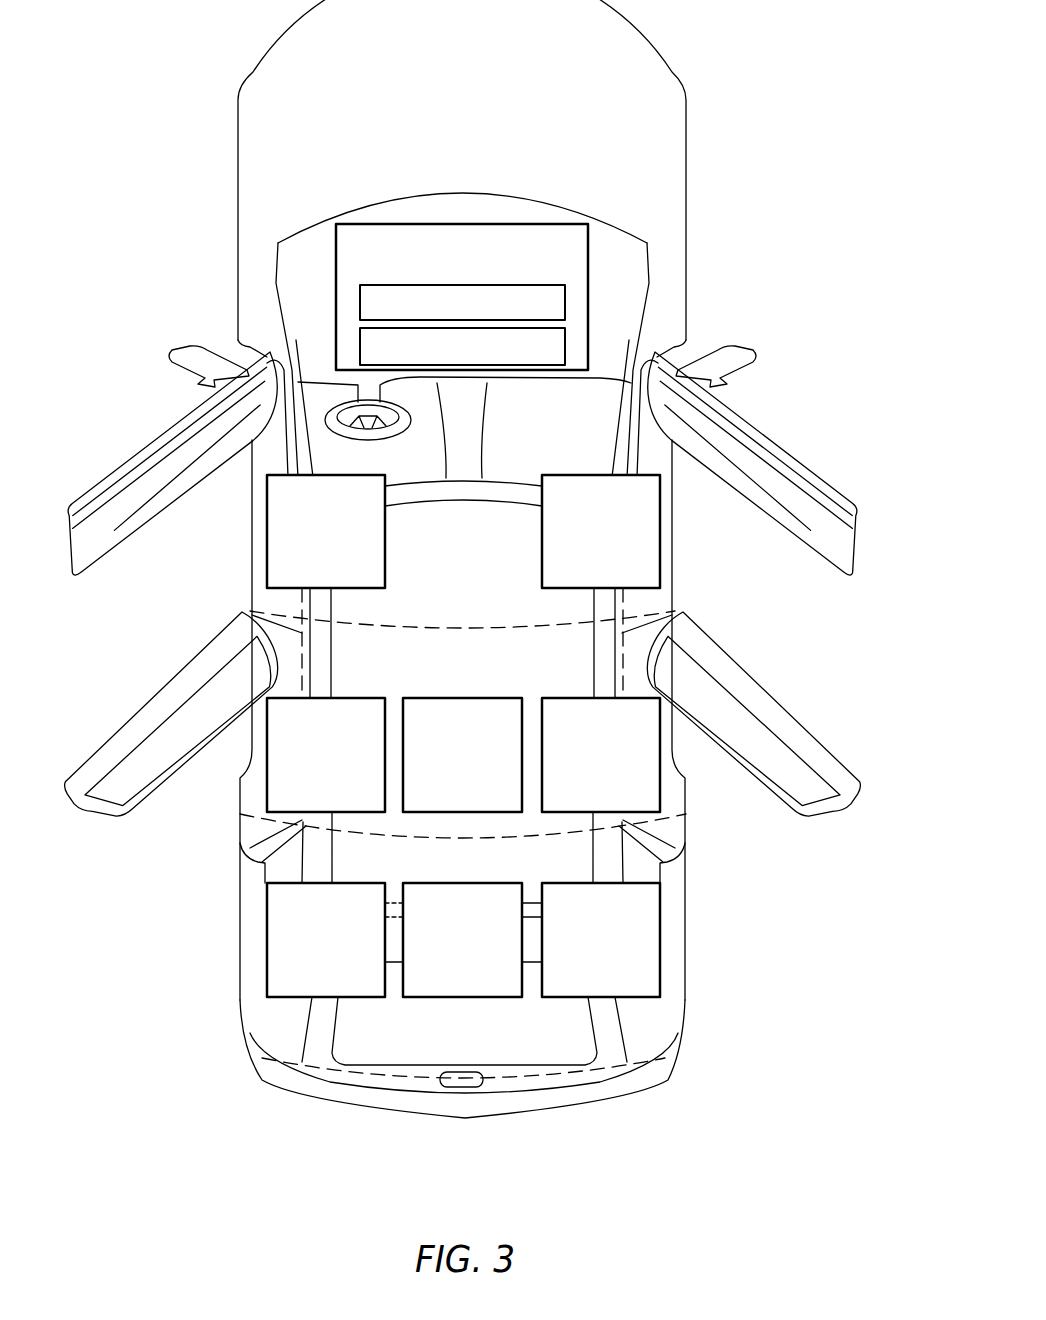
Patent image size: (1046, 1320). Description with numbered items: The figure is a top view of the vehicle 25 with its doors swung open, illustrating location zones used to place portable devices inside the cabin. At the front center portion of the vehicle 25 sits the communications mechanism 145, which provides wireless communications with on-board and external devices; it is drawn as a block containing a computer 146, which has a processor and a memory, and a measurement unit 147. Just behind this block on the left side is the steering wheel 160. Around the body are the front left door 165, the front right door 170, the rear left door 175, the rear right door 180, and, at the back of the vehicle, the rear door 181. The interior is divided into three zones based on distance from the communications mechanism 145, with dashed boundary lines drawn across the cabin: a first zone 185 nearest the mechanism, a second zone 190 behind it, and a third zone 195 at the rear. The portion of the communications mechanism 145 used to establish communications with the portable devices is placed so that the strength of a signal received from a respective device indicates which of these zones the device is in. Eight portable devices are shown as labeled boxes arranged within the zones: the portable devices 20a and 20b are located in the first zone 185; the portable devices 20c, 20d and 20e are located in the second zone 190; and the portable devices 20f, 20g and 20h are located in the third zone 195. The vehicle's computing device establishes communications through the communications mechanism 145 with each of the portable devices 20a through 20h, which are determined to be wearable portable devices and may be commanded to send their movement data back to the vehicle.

The vehicle 25 is at (688, 167).
The communications mechanism 145 is at (528, 224).
The computer 146 is at (565, 297).
The measurement unit 147 is at (565, 337).
The steering wheel 160 is at (340, 398).
The front left door 165 is at (123, 457).
The front right door 170 is at (805, 455).
The rear left door 175 is at (123, 730).
The rear right door 180 is at (803, 730).
The rear door 181 is at (607, 1050).
The first zone 185 is at (471, 592).
The second zone 190 is at (471, 680).
The third zone 195 is at (471, 1044).
The portable device 20a is at (318, 575).
The portable device 20b is at (593, 575).
The portable device 20c is at (318, 799).
The portable device 20d is at (454, 799).
The portable device 20e is at (593, 799).
The portable device 20f is at (318, 984).
The portable device 20g is at (454, 984).
The portable device 20h is at (593, 984).